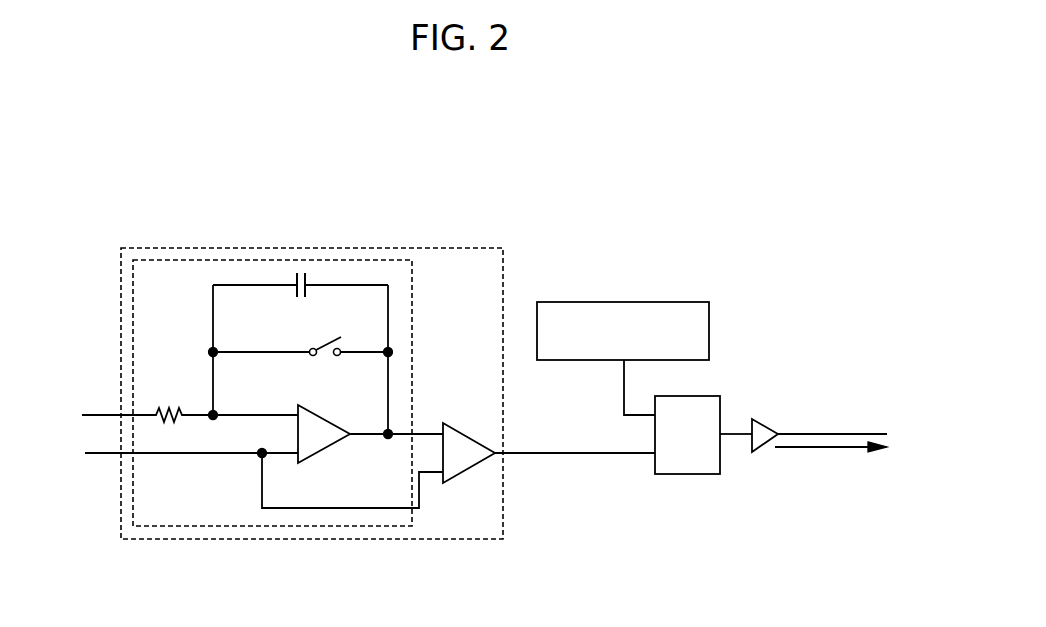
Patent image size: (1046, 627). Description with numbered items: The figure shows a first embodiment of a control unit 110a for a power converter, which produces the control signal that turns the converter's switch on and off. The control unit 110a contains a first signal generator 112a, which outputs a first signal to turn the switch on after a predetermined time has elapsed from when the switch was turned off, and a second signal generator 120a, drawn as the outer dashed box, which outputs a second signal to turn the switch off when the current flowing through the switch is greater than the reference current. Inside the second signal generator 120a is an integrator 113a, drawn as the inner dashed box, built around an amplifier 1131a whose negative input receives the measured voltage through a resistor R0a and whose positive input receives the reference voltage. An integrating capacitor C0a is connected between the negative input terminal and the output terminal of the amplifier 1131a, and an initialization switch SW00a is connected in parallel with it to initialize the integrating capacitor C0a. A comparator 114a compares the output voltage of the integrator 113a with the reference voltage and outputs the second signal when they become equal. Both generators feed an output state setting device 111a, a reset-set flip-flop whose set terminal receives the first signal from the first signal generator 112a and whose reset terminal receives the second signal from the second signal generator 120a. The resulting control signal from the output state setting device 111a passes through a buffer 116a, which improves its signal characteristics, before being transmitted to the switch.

The control unit 110a is at (97, 153).
The second signal generator 120a is at (292, 248).
The integrator 113a is at (413, 328).
The amplifier 1131a is at (329, 450).
The comparator 114a is at (478, 402).
The first signal generator 112a is at (628, 302).
The output state setting device 111a is at (688, 474).
The buffer 116a is at (790, 398).
The resistor R0a is at (169, 426).
The integrating capacitor C0a is at (300, 294).
The initialization switch SW00a is at (300, 362).